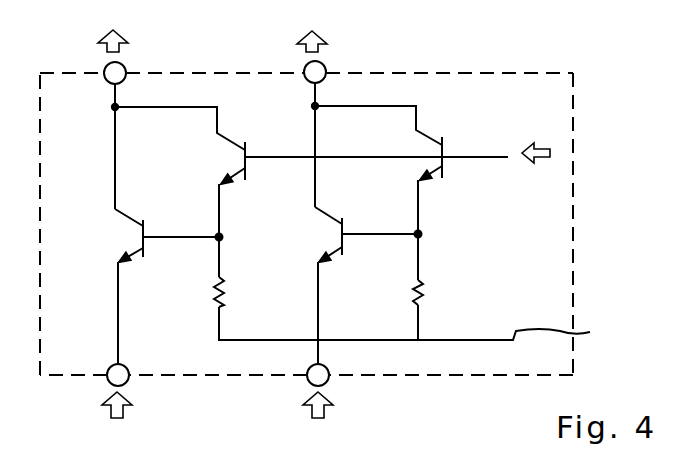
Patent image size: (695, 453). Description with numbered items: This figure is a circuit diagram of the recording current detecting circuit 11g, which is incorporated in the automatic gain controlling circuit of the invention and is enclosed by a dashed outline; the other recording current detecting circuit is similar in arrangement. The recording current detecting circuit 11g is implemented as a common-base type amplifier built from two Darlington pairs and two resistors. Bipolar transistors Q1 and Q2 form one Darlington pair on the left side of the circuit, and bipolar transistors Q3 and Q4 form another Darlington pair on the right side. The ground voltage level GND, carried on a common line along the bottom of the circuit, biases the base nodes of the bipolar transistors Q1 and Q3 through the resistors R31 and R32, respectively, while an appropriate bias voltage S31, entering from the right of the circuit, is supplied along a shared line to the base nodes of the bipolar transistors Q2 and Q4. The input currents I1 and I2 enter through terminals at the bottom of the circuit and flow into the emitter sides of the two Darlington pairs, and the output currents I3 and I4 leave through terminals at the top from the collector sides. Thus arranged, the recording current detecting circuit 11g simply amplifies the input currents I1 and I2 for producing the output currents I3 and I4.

The input current I1 is at (134, 413).
The input current I2 is at (335, 412).
The output current I3 is at (129, 48).
The output current I4 is at (328, 48).
The bipolar transistor Q1 is at (128, 214).
The bipolar transistor Q2 is at (246, 150).
The bipolar transistor Q3 is at (343, 222).
The bipolar transistor Q4 is at (444, 145).
The resistor R31 is at (214, 298).
The resistor R32 is at (423, 279).
The bias voltage S31 is at (550, 153).
The recording current detecting circuit 11g is at (573, 280).
The ground voltage level GND is at (431, 323).